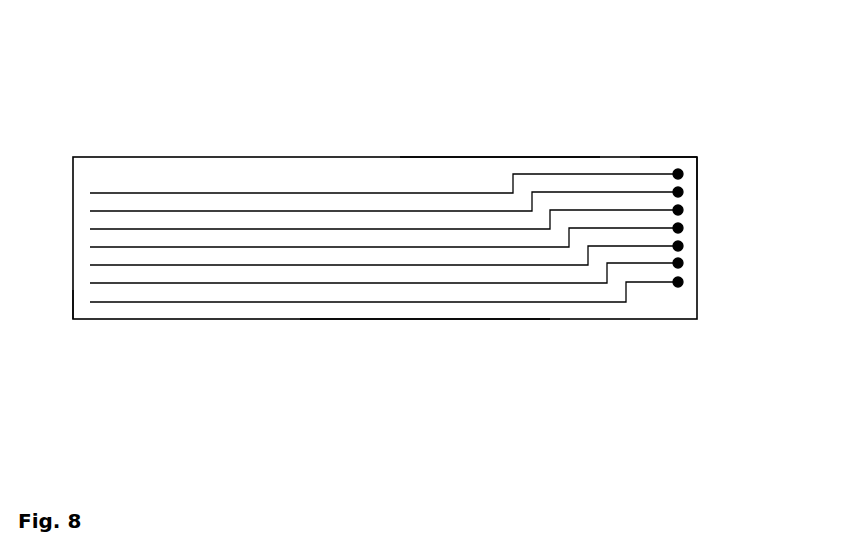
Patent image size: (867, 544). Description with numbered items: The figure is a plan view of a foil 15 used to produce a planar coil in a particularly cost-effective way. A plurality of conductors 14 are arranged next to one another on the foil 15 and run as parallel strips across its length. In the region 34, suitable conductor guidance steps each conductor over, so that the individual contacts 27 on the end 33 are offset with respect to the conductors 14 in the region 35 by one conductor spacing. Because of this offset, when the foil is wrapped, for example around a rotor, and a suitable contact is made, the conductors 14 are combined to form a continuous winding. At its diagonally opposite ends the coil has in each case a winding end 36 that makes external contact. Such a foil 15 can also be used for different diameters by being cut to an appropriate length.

The foil 15 is at (106, 144).
The conductors 14 is at (350, 215).
The contacts 27 is at (692, 214).
The region 34 is at (513, 139).
The end 33 is at (668, 149).
The winding end 36 is at (685, 153).
The region 35 is at (428, 348).